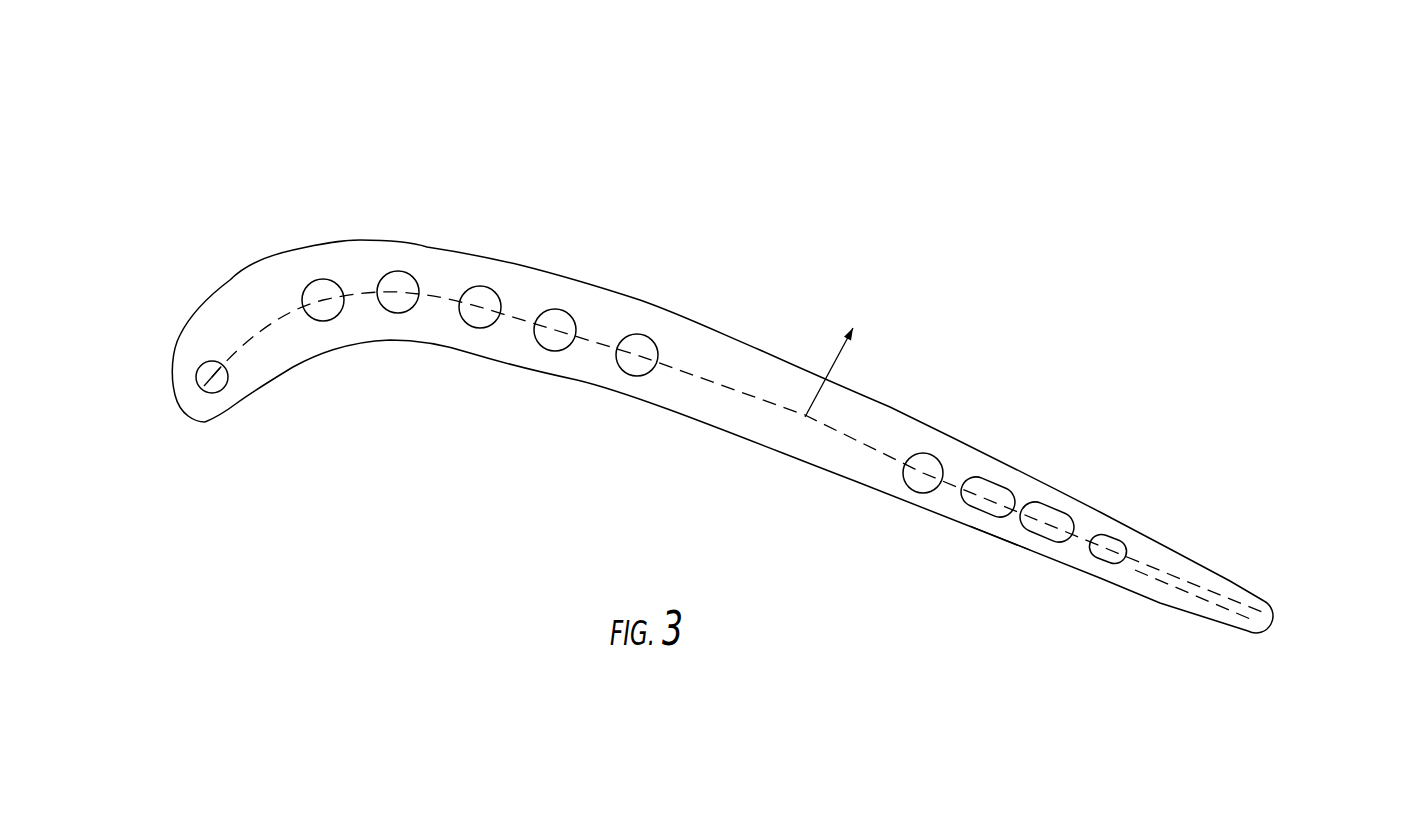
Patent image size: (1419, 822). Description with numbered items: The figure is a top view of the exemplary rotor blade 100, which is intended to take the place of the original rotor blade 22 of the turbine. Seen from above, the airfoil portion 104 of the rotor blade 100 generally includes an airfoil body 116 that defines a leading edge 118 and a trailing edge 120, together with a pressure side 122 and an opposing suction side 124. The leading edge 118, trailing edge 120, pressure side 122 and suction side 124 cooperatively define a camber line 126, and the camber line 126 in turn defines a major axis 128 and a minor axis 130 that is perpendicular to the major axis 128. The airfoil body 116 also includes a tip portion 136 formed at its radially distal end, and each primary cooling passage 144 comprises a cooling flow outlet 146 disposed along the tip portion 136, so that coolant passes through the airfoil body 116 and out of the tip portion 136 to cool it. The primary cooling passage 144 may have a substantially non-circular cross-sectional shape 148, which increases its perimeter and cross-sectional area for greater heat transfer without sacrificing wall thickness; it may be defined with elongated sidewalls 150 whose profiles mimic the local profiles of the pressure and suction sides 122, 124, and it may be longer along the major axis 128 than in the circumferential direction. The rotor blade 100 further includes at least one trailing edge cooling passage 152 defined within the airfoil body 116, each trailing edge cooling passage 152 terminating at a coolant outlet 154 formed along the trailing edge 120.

The rotor blade 22 is at (960, 77).
The rotor blade 100 is at (932, 128).
The airfoil portion 104 is at (323, 215).
The airfoil body 116 is at (750, 418).
The leading edge 118 is at (183, 416).
The trailing edge 120 is at (1248, 652).
The pressure side 122 is at (577, 383).
The suction side 124 is at (537, 267).
The camber line 126 is at (733, 387).
The major axis 128 is at (827, 432).
The minor axis 130 is at (822, 370).
The tip portion 136 is at (640, 300).
The primary cooling passage 144 is at (210, 371).
The cooling flow outlet 146 is at (220, 374).
The non-circular cross-sectional shape 148 is at (997, 527).
The elongated sidewalls 150 is at (985, 493).
The trailing edge cooling passage 152 is at (1193, 587).
The coolant outlet 154 is at (1270, 620).